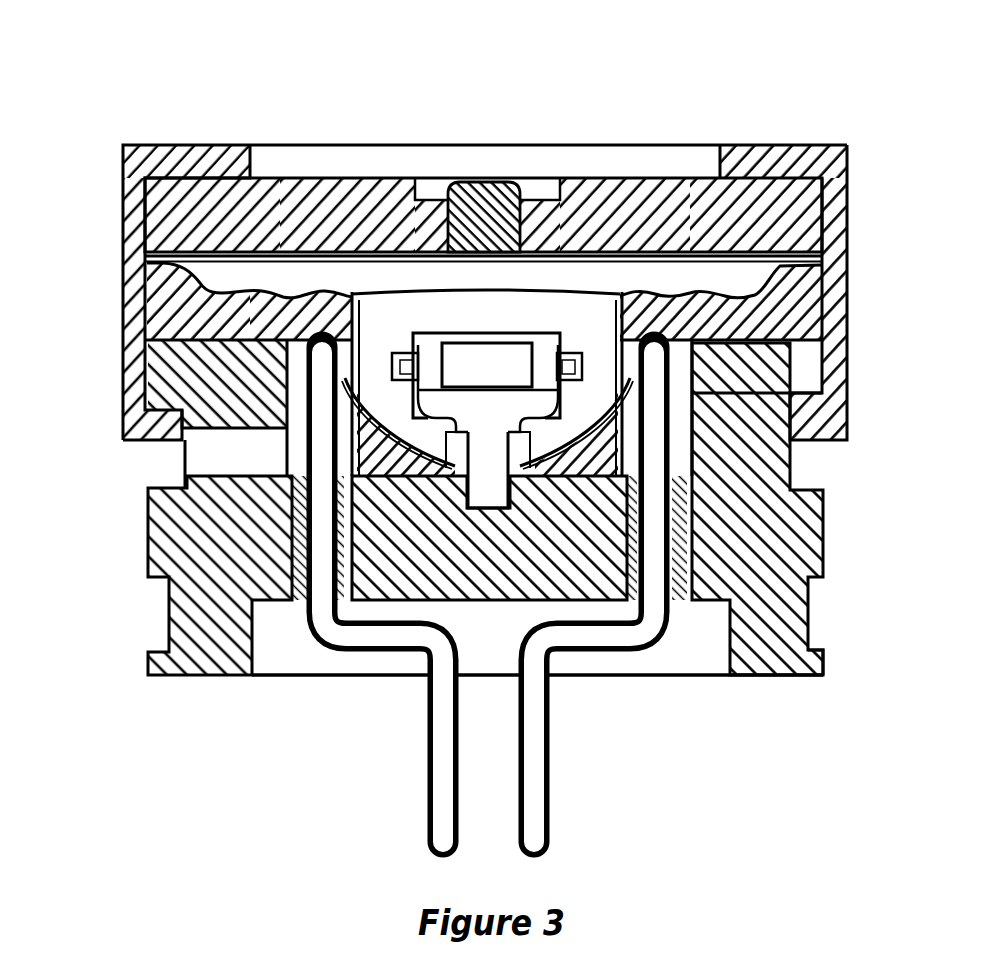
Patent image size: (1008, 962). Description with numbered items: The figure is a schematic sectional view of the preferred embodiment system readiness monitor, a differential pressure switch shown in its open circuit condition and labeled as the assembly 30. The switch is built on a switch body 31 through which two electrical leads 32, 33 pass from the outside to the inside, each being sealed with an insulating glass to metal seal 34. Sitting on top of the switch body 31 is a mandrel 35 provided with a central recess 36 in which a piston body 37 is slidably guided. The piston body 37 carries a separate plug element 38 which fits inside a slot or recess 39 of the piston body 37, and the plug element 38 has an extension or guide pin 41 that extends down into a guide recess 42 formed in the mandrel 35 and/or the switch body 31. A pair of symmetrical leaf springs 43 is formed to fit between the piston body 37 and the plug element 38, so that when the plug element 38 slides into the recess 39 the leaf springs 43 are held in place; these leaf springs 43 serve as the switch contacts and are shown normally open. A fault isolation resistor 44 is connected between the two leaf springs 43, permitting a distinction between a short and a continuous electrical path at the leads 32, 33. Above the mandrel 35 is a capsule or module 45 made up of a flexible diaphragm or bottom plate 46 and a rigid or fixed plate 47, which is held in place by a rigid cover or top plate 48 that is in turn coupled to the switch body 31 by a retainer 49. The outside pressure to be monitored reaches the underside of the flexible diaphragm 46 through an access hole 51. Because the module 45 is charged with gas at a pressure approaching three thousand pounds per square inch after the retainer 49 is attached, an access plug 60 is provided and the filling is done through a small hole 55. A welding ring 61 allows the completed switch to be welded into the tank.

The lamp assembly 30 is at (247, 82).
The switch body 31 is at (808, 548).
The electrical lead 32 is at (426, 806).
The electrical lead 33 is at (548, 803).
The insulating glass to metal seal 34 is at (297, 600).
The mandrel 35 is at (803, 312).
The central recess 36 is at (611, 306).
The piston body 37 is at (380, 306).
The plug element 38 is at (520, 400).
The slot or recess 39 is at (438, 337).
The guide pin 41 is at (490, 488).
The guide recess 42 is at (452, 476).
The leaf springs 43 is at (600, 418).
The fault isolation resistor 44 is at (502, 376).
The capsule or module 45 is at (242, 290).
The flexible diaphragm 46 is at (823, 218).
The rigid or fixed plate 47 is at (742, 257).
The rigid cover or top plate 48 is at (680, 178).
The retainer 49 is at (123, 170).
The access hole 51 is at (217, 432).
The small hole 55 is at (485, 258).
The access plug 60 is at (450, 183).
The welding ring 61 is at (823, 660).